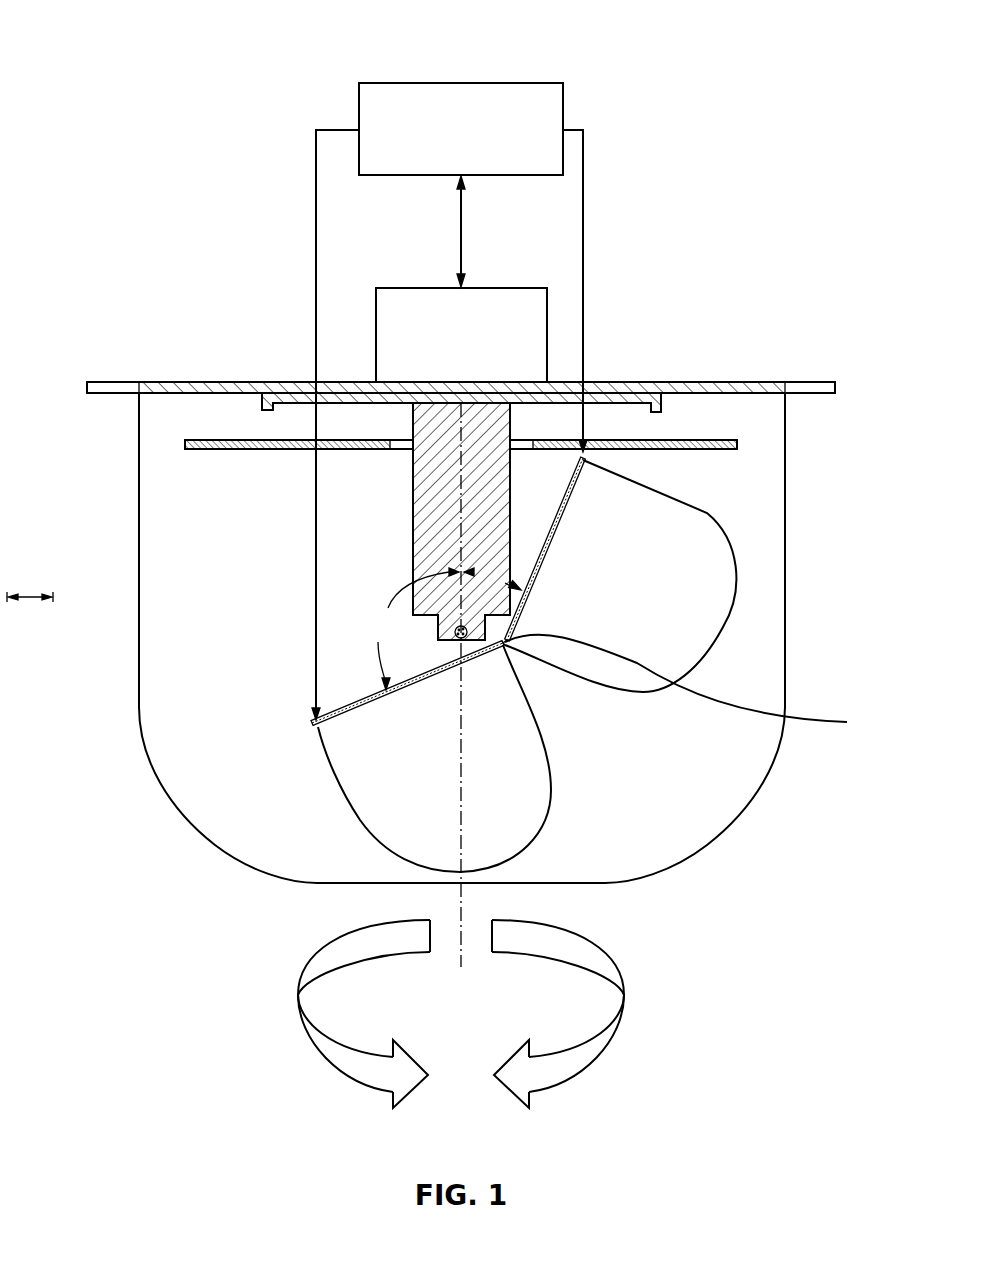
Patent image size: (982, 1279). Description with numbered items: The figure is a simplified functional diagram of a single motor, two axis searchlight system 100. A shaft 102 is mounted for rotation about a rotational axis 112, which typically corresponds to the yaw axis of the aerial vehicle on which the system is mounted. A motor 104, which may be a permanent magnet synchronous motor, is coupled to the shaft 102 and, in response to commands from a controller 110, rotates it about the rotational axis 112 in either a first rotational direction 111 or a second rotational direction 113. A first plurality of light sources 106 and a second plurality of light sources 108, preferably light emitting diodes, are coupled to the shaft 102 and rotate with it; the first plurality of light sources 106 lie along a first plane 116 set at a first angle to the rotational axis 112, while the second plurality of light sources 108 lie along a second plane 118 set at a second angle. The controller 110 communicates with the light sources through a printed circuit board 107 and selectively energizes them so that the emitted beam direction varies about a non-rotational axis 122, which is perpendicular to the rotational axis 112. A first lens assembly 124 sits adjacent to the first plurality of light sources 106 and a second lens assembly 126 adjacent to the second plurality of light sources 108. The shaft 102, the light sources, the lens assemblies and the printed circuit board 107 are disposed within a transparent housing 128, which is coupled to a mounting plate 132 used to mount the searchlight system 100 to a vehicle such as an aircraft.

The searchlight system 100 is at (152, 48).
The controller 110 is at (430, 83).
The motor 104 is at (430, 288).
The mounting plate 132 is at (810, 388).
The printed circuit board 107 is at (688, 438).
The transparent housing 128 is at (785, 627).
The shaft 102 is at (413, 493).
The first plane 116 is at (562, 512).
The first plurality of light sources 106 is at (572, 489).
The second plurality of light sources 108 is at (383, 717).
The second plane 118 is at (383, 717).
The first lens assembly 124 is at (740, 566).
The non-rotational axis 122 is at (701, 686).
The second lens assembly 126 is at (565, 808).
The rotational axis 112 is at (470, 887).
The second rotational direction 113 is at (298, 1003).
The first rotational direction 111 is at (624, 1003).